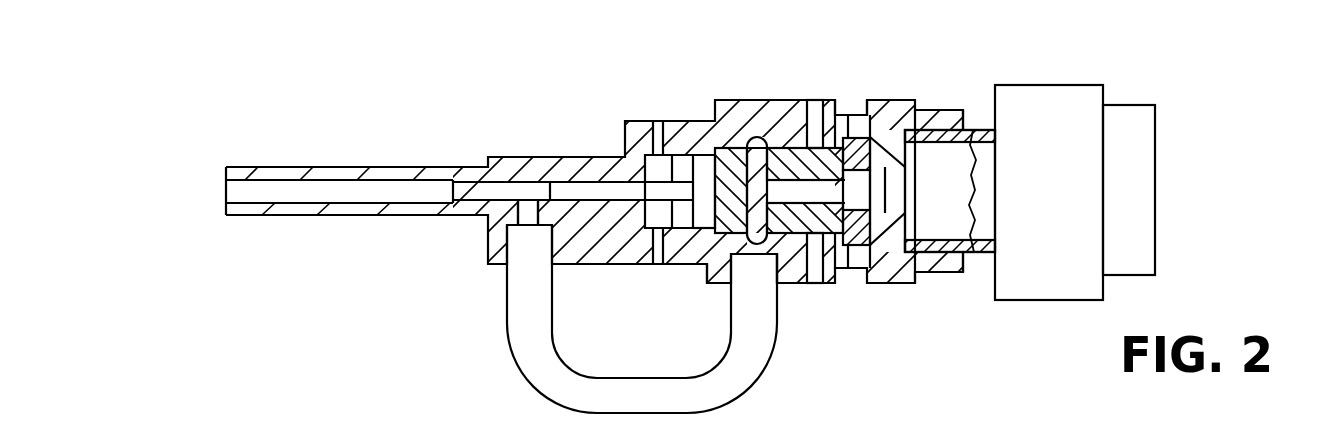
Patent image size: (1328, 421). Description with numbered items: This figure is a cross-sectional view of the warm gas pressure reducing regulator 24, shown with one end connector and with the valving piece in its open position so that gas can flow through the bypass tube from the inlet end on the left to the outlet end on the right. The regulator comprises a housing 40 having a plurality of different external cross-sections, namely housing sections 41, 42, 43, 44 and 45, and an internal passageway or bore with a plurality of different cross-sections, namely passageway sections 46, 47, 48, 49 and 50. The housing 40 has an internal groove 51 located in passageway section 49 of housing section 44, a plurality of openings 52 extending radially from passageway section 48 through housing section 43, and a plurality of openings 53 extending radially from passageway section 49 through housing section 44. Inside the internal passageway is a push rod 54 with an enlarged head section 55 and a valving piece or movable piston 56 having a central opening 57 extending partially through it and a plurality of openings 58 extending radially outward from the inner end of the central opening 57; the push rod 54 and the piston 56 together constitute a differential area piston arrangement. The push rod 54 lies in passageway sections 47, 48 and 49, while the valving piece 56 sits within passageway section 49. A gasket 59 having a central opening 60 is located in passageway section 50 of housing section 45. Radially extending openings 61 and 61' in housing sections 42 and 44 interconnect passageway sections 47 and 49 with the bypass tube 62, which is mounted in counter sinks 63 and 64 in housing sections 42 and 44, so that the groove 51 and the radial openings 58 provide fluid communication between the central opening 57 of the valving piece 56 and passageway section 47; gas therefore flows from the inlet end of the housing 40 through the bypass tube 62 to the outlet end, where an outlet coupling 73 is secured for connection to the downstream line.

The regulator 24 is at (578, 217).
The housing 40 is at (786, 191).
The housing section 41 is at (325, 182).
The housing section 42 is at (515, 155).
The housing section 43 is at (688, 122).
The housing section 44 is at (796, 125).
The housing section 45 is at (860, 115).
The passageway section 46 is at (226, 196).
The passageway section 47 is at (455, 216).
The passageway section 48 is at (666, 172).
The passageway section 49 is at (682, 238).
The passageway section 50 is at (898, 258).
The internal groove 51 is at (772, 150).
The openings 52 is at (660, 264).
The openings 53 is at (828, 280).
The push rod 54 is at (592, 190).
The enlarged head section 55 is at (708, 172).
The valving piece 56 is at (815, 118).
The central opening 57 is at (876, 266).
The openings 58 is at (788, 272).
The gasket 59 is at (868, 197).
The central opening 60 is at (868, 205).
The radially extending opening 61 is at (471, 241).
The radially extending opening 61' is at (681, 308).
The bypass tube 62 is at (591, 306).
The counter sink 63 is at (505, 250).
The counter sink 64 is at (735, 280).
The outlet coupling 73 is at (1075, 192).